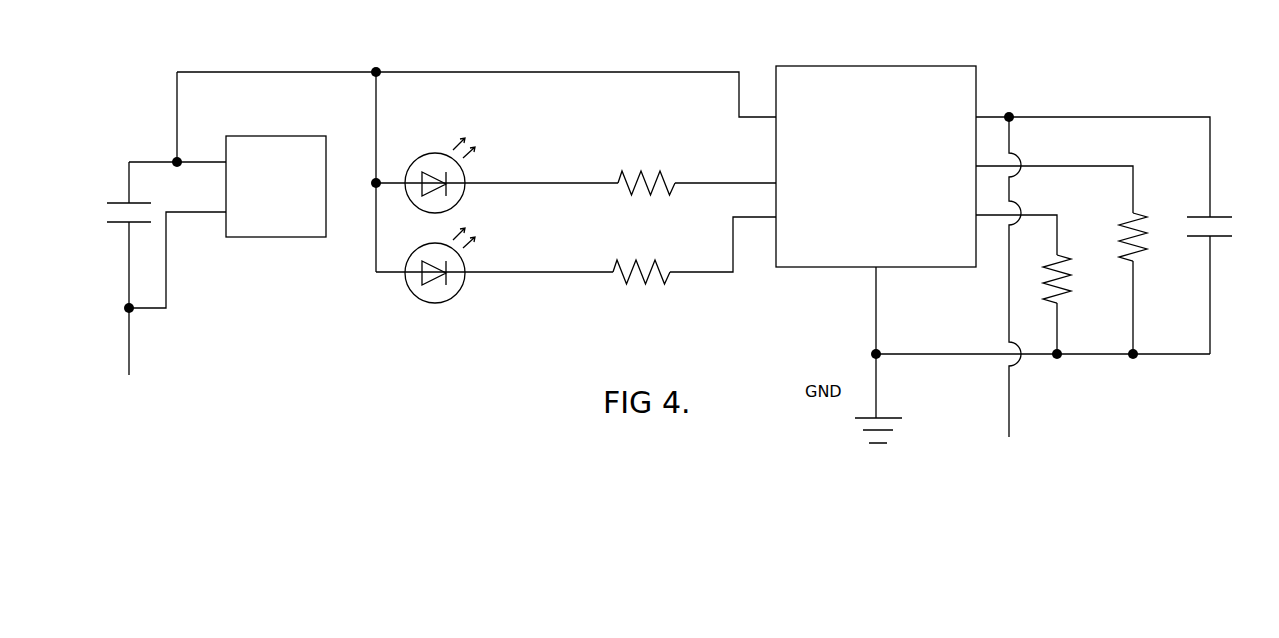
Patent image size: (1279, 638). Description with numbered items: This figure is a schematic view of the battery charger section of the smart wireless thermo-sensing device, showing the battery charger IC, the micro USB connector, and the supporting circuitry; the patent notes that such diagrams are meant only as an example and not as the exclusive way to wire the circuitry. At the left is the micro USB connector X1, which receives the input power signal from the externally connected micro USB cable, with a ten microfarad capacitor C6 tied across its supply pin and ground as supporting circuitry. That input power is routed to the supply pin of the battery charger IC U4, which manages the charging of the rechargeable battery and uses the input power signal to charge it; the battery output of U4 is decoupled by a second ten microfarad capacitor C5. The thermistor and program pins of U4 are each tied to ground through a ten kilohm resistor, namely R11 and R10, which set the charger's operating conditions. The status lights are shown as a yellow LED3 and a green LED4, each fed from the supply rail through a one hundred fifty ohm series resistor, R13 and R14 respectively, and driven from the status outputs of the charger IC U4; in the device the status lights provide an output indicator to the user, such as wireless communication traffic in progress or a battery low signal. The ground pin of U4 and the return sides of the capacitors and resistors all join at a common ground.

The capacitor 10uF C6 is at (113, 268).
The USB connector X1 is at (276, 175).
The yellow LED LED3 is at (467, 187).
The green LED LED4 is at (466, 283).
The resistor 150 ohm R13 is at (646, 209).
The resistor 150 ohm R14 is at (641, 299).
The MCP73833 charger IC U4 is at (876, 154).
The resistor 10k ohm R11 is at (1151, 216).
The resistor 10k ohm R10 is at (1078, 303).
The capacitor 10uF C5 is at (1226, 196).